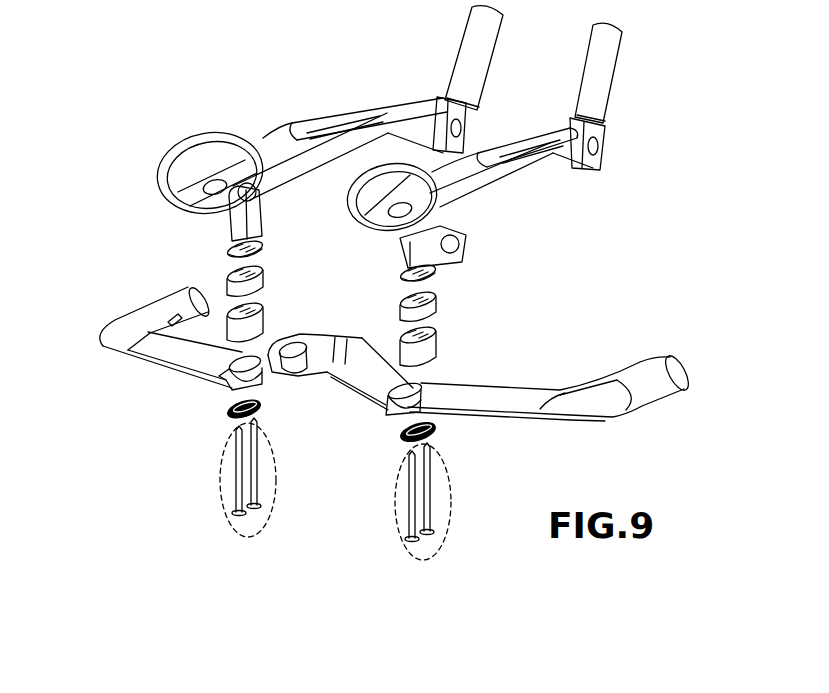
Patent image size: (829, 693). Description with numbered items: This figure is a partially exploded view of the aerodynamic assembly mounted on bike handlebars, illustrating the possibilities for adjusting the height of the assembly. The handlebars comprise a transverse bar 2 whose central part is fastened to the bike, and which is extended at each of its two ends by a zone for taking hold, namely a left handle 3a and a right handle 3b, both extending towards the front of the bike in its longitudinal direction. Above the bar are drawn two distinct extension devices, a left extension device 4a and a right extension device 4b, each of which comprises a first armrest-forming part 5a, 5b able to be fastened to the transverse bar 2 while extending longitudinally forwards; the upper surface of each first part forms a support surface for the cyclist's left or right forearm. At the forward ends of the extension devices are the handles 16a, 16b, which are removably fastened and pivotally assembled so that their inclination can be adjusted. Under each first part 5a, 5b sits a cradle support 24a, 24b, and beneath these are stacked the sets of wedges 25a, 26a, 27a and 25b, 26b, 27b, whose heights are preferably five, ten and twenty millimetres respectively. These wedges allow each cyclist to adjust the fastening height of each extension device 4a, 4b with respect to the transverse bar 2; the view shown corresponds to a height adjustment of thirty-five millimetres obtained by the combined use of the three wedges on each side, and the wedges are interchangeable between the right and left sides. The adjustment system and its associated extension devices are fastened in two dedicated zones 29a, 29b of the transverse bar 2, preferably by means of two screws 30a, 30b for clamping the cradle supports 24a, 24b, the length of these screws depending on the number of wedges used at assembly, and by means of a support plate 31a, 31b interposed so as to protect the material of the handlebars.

The transverse bar 2 is at (483, 401).
The left handle 3a is at (178, 302).
The right handle 3b is at (653, 388).
The left extension device 4a is at (283, 122).
The right extension device 4b is at (550, 193).
The left armrest-forming part 5a is at (175, 155).
The right armrest-forming part 5b is at (356, 226).
The left handle 16a is at (473, 25).
The right handle 16b is at (603, 78).
The left cradle support 24a is at (225, 236).
The right cradle support 24b is at (466, 232).
The left wedge 25a is at (262, 251).
The right wedge 25b is at (437, 270).
The left wedge 26a is at (262, 277).
The right wedge 26b is at (437, 303).
The left wedge 27a is at (262, 322).
The right wedge 27b is at (437, 353).
The left dedicated zone 29a is at (238, 383).
The right dedicated zone 29b is at (425, 384).
The left screw 30a is at (222, 482).
The right screw 30b is at (395, 502).
The left support plate 31a is at (262, 406).
The right support plate 31b is at (402, 437).